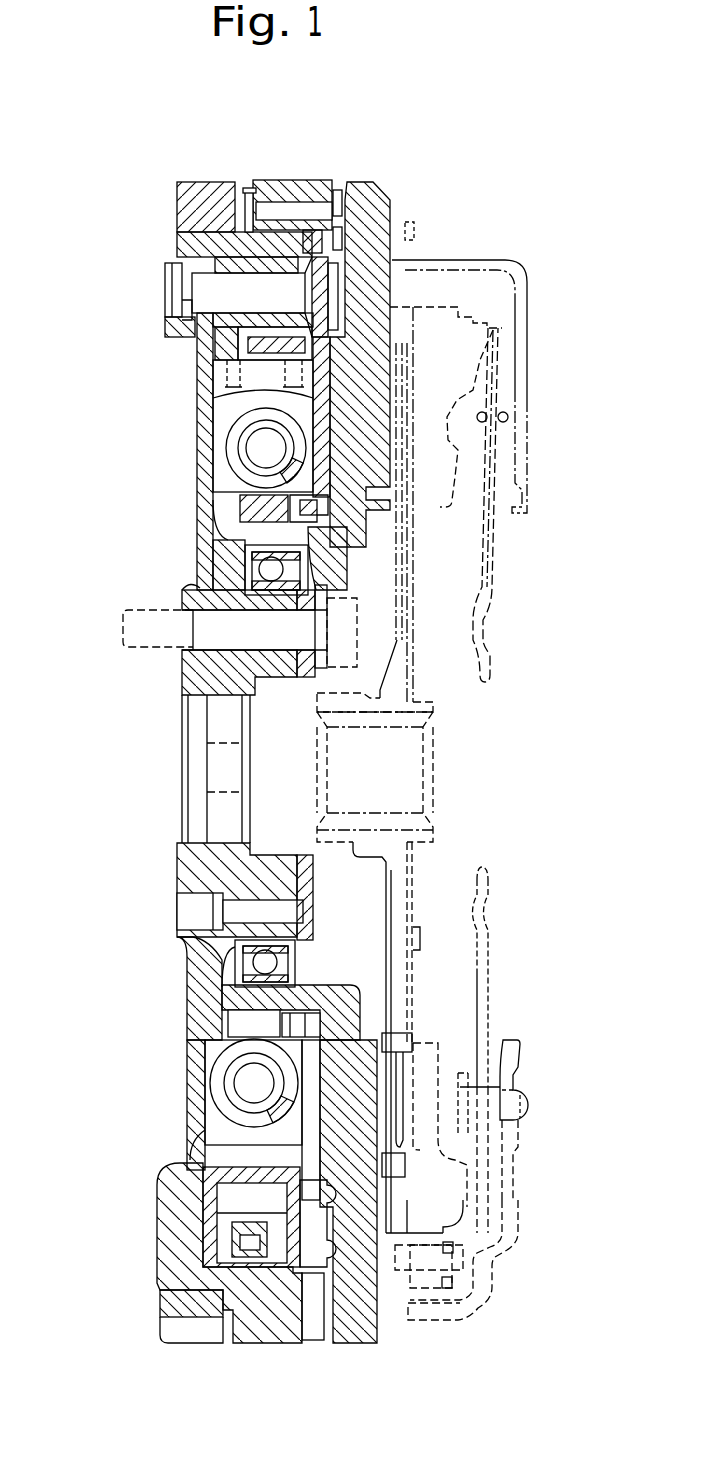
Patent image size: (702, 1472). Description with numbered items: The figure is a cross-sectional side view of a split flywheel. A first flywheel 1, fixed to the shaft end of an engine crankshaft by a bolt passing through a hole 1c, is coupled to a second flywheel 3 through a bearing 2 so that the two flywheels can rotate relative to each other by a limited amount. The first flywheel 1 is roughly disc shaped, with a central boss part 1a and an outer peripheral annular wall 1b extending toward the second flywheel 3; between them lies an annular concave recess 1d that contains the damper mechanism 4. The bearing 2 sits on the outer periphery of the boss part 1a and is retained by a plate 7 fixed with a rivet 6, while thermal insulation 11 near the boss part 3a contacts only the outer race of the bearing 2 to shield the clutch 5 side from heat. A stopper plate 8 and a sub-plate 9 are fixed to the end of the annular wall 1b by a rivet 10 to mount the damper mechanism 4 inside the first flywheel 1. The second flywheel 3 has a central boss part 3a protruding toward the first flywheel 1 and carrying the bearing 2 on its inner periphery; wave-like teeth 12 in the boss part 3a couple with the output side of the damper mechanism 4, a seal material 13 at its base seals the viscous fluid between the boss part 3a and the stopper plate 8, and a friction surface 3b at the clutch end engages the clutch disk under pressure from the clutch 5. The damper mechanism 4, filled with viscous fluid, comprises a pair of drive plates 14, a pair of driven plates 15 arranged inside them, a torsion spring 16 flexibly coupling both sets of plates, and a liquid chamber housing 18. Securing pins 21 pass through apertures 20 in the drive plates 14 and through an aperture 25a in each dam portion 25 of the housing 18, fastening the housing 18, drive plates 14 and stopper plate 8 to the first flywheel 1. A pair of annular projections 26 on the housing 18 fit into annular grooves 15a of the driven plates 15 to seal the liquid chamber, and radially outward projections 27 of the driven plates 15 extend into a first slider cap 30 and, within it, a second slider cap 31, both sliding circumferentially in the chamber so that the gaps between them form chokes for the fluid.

The first flywheel 1 is at (217, 541).
The boss part 1a is at (212, 673).
The outer peripheral annular wall 1b is at (326, 205).
The hole 1c is at (200, 637).
The annular concave recess 1d is at (222, 407).
The bearing 2 is at (190, 593).
The second flywheel 3 is at (392, 230).
The boss part 3a is at (300, 557).
The friction surface 3b is at (388, 398).
The damper mechanism 4 is at (225, 402).
The clutch 5 is at (536, 399).
The rivet 6 is at (240, 907).
The plate 7 is at (308, 878).
The stopper plate 8 is at (338, 210).
The sub-plate 9 is at (390, 238).
The rivet 10 is at (290, 212).
The thermal insulation 11 is at (247, 553).
The wave-like teeth 12 is at (233, 528).
The seal material 13 is at (300, 537).
The drive plates 14 is at (182, 222).
The driven plates 15 is at (215, 333).
The annular grooves 15a is at (238, 1180).
The torsion spring 16 is at (223, 442).
The liquid chamber housing 18 is at (180, 1318).
The apertures 20 is at (170, 277).
The securing pins 21 is at (215, 296).
The dam portions 25 is at (295, 273).
The aperture 25a is at (402, 305).
The annular projections 26 is at (218, 348).
The projections 27 is at (233, 1188).
The first slider cap 30 is at (205, 1252).
The second slider cap 31 is at (217, 1228).